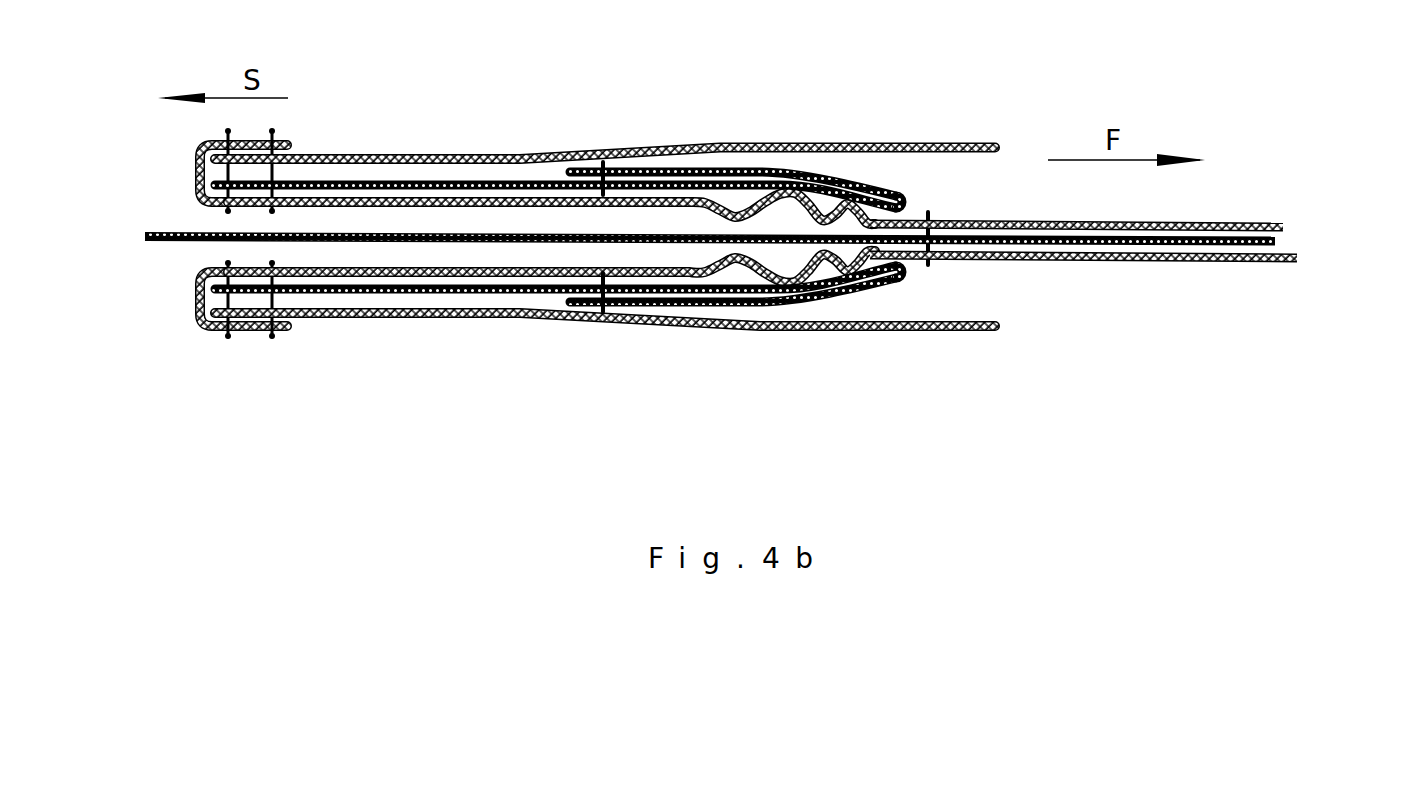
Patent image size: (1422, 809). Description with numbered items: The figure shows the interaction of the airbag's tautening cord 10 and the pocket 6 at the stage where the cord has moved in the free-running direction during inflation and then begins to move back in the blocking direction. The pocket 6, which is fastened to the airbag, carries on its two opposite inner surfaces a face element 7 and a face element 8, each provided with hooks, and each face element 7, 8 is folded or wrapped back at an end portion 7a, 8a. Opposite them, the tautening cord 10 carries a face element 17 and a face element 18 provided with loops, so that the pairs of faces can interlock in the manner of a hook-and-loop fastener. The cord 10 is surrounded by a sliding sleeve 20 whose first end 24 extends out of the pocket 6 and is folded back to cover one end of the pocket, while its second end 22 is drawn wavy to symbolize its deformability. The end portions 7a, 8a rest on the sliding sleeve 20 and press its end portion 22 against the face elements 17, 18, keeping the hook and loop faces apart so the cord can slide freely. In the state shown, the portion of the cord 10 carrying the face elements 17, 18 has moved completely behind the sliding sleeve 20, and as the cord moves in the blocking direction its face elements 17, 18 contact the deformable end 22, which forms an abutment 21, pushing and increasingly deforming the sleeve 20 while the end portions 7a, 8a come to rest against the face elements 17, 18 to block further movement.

The pocket 6 is at (640, 152).
The face element 7 is at (518, 183).
The end portion 7a is at (917, 200).
The face element 8 is at (520, 297).
The end portion 8a is at (923, 278).
The tautening cord 10 is at (1283, 237).
The face element 17 is at (1283, 238).
The face element 18 is at (1230, 262).
The sliding sleeve 20 is at (417, 192).
The abutment 21 is at (838, 250).
The second end 22 is at (790, 277).
The first end 24 is at (290, 140).